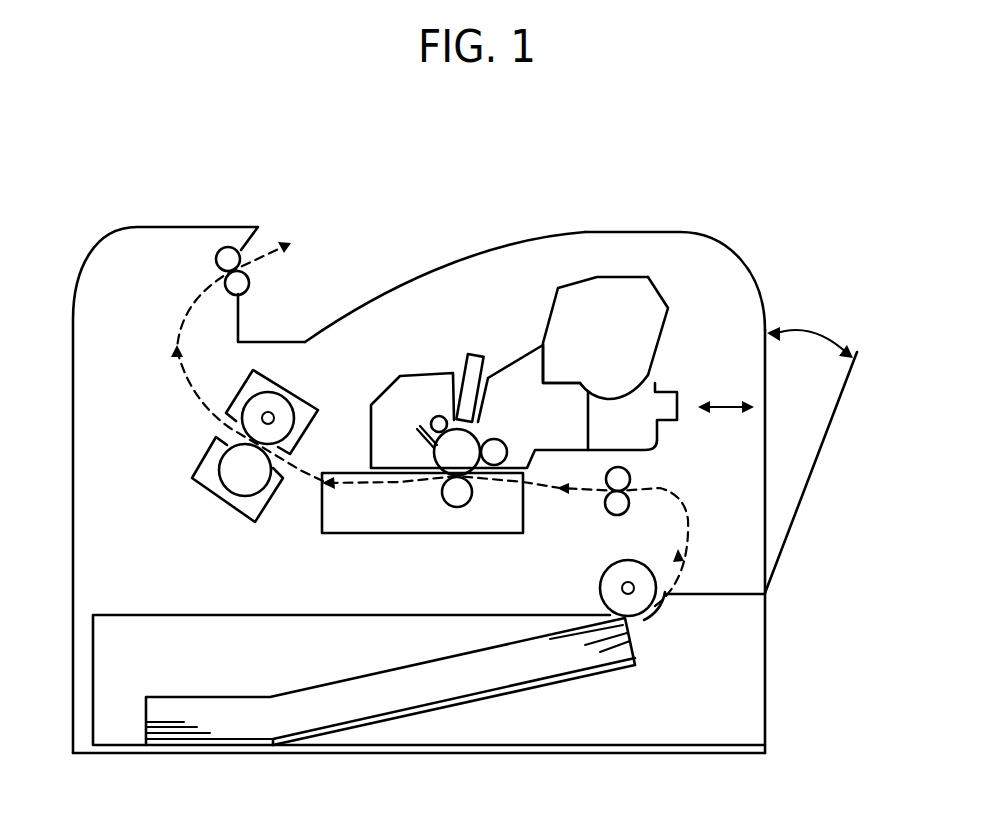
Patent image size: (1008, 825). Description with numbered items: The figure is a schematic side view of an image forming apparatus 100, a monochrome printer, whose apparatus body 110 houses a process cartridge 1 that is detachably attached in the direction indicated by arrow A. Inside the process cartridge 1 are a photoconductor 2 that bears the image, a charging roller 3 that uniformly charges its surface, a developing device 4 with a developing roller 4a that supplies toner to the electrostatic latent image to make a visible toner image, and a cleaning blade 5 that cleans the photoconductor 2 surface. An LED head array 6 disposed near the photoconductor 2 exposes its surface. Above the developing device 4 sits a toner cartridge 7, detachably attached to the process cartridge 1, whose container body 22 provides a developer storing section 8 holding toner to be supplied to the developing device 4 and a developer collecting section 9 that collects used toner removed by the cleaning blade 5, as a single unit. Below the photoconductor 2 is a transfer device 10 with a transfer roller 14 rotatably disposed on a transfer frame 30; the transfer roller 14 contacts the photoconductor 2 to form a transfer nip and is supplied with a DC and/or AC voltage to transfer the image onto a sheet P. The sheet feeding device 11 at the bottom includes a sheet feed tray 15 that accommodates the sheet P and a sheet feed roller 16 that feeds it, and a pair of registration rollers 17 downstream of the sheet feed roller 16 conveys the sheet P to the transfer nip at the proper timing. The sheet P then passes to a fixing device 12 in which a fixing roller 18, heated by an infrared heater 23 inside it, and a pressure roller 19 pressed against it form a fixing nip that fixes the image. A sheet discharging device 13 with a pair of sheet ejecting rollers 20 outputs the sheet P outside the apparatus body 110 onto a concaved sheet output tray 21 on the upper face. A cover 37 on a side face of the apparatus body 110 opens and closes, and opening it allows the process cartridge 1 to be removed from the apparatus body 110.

The image forming apparatus 100 is at (764, 198).
The process cartridge 1 is at (555, 363).
The photoconductor 2 is at (434, 470).
The charging roller 3 is at (433, 416).
The developing device 4 is at (519, 356).
The developing roller 4a is at (501, 441).
The cleaning blade 5 is at (417, 426).
The LED head array 6 is at (465, 365).
The toner cartridge 7 is at (641, 299).
The developer storing section 8 is at (648, 333).
The developer collecting section 9 is at (639, 381).
The container body 22 is at (660, 338).
The transfer device 10 is at (424, 533).
The transfer frame 30 is at (362, 534).
The transfer roller 14 is at (455, 508).
The sheet feeding device 11 is at (735, 560).
The fixing device 12 is at (235, 446).
The fixing roller 18 is at (297, 400).
The pressure roller 19 is at (268, 494).
The infrared heater 23 is at (251, 400).
The sheet discharging device 13 is at (206, 256).
The pair of sheet ejecting rollers 20 is at (240, 274).
The sheet output tray 21 is at (433, 268).
The sheet feed tray 15 is at (429, 659).
The sheet feed roller 16 is at (600, 588).
The pair of registration rollers 17 is at (629, 500).
The cover 37 is at (842, 393).
The apparatus body 110 is at (765, 417).
The arrow A is at (726, 418).
The sheet P is at (464, 684).